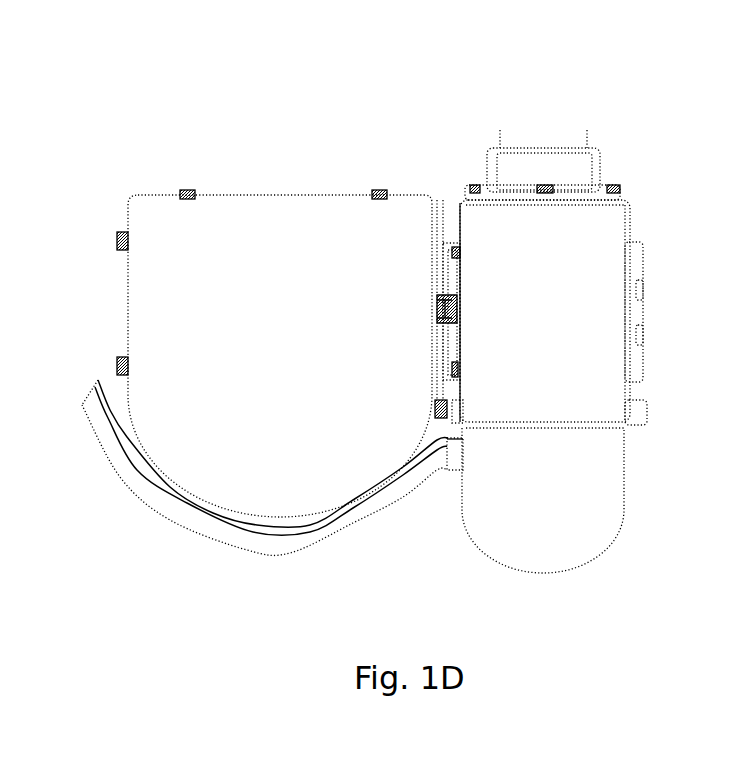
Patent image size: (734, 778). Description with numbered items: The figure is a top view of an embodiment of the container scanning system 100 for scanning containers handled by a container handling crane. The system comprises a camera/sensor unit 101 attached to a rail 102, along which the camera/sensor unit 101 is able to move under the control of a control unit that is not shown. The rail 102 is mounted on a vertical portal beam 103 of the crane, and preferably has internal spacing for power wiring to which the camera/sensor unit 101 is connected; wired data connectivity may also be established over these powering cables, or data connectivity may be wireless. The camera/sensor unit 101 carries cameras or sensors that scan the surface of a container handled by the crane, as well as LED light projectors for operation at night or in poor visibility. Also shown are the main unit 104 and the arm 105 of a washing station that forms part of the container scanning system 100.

The container scanning system 100 is at (180, 123).
The camera/sensor unit 101 is at (282, 212).
The rail 102 is at (448, 238).
The vertical portal beam 103 is at (610, 227).
The main unit 104 is at (535, 560).
The arm 105 is at (260, 543).